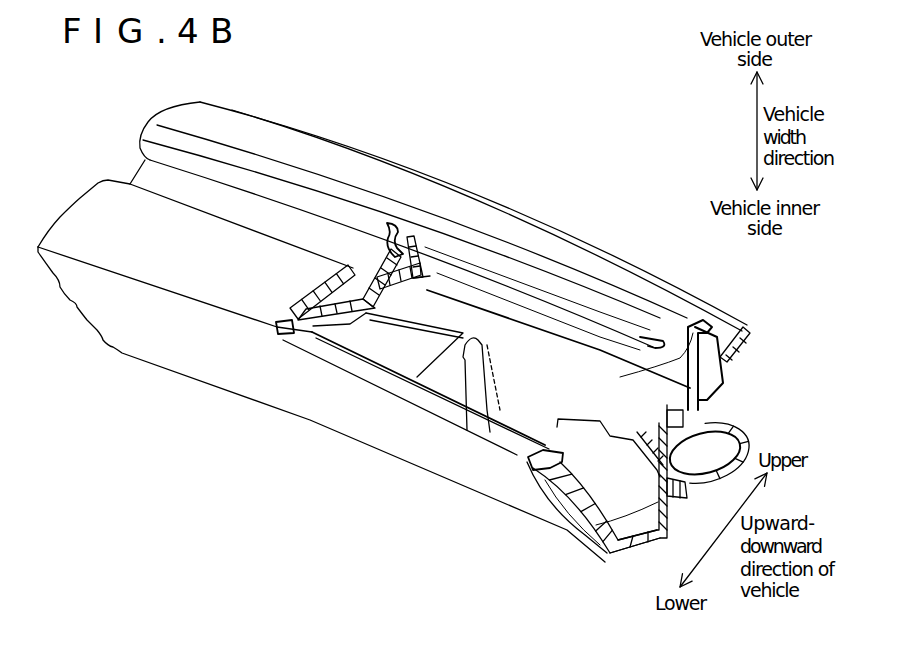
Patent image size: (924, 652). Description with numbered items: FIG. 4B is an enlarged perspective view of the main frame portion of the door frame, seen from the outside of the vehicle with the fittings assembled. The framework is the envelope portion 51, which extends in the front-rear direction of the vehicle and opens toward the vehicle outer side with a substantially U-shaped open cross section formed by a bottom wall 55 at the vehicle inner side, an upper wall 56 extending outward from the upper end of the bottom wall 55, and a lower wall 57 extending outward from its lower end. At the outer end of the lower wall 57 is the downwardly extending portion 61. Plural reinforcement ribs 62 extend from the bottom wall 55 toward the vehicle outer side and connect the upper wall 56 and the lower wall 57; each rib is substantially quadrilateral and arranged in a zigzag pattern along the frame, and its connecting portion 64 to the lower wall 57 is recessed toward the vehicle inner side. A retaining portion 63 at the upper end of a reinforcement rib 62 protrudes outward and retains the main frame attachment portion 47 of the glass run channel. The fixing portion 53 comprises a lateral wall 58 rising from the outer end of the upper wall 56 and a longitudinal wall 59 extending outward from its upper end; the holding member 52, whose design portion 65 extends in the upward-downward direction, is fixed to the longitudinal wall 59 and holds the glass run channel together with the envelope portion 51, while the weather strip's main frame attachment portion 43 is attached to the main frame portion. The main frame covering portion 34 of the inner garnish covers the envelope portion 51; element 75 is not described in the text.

The holding member (frame molding) 52 is at (164, 110).
The main frame attachment portion 47 is at (65, 208).
The main frame covering portion 34 is at (113, 354).
The retaining portion 63 is at (327, 315).
The design portion 65 is at (616, 285).
The fixing portion 53 is at (688, 315).
The main frame attachment portion 43 is at (742, 325).
The longitudinal wall 59 is at (620, 377).
The lateral wall 58 is at (660, 413).
The upper wall 56 is at (687, 494).
The downwardly extending portion 61 is at (528, 464).
The lower wall 57 is at (567, 518).
The envelope portion 51 is at (610, 558).
The bottom wall 55 is at (645, 552).
The reinforcement rib 62 is at (393, 347).
The connecting portion 64 is at (462, 405).
The side wall 75 is at (317, 348).